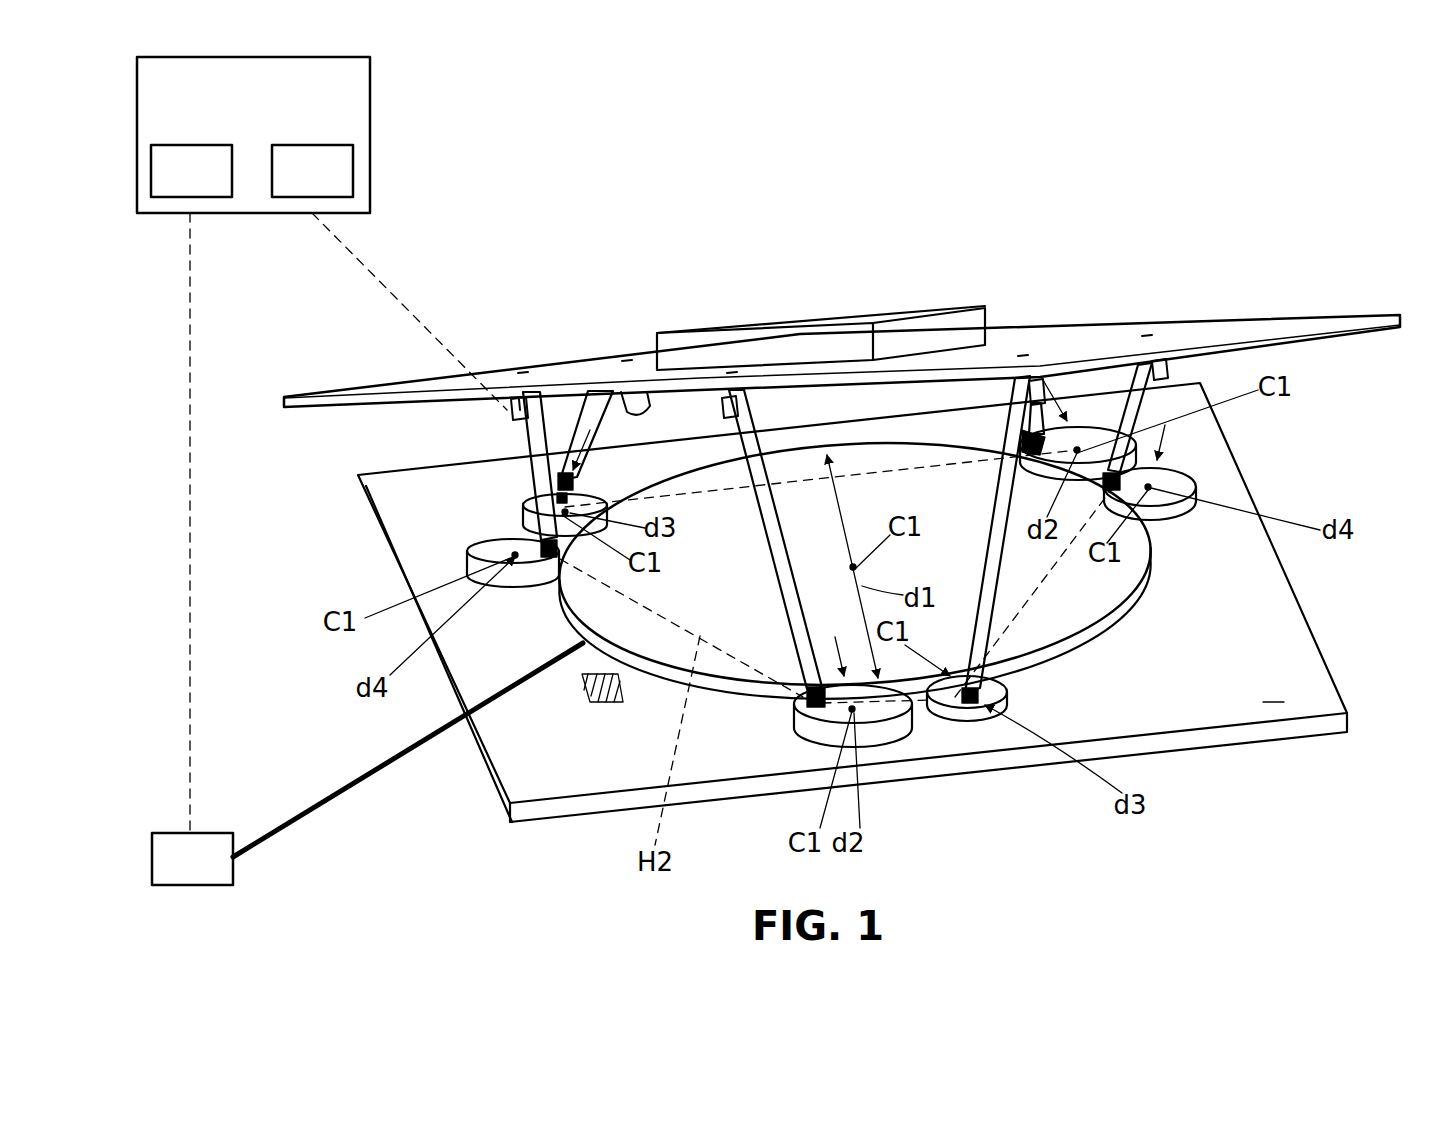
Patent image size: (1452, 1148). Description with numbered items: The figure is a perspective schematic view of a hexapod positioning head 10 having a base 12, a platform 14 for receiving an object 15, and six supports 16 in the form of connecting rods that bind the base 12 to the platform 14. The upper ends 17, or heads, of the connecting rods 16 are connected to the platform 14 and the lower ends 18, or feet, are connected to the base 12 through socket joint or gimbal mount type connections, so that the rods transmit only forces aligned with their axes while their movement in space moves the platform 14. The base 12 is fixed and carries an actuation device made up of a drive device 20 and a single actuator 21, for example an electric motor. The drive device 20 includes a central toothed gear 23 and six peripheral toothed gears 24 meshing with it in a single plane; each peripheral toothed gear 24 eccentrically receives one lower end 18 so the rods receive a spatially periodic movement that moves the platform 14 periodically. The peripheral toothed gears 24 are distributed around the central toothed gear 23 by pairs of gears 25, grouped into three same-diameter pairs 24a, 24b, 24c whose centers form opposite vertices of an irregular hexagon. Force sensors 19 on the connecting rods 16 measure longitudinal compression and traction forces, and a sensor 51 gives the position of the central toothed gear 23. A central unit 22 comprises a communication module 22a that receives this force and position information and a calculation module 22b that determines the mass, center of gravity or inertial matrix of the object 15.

The hexapod positioning head 10 is at (378, 640).
The base 12 is at (520, 752).
The platform 14 is at (1095, 340).
The object 15 is at (830, 322).
The supports 16 is at (650, 400).
The upper ends 17 is at (745, 392).
The lower ends 18 is at (553, 490).
The force sensors 19 is at (625, 395).
The drive device 20 is at (1160, 575).
The actuator 21 is at (367, 764).
The central unit 22 is at (372, 100).
The communication module 22a is at (191, 171).
The calculation module 22b is at (312, 171).
The central toothed gear 23 is at (1100, 597).
The peripheral toothed gears 24 is at (813, 623).
The pair of gears 24a is at (887, 737).
The pair of gears 24b is at (523, 514).
The pair of gears 24c is at (468, 538).
The pairs of gears 25 is at (250, 520).
The sensor 51 is at (600, 702).